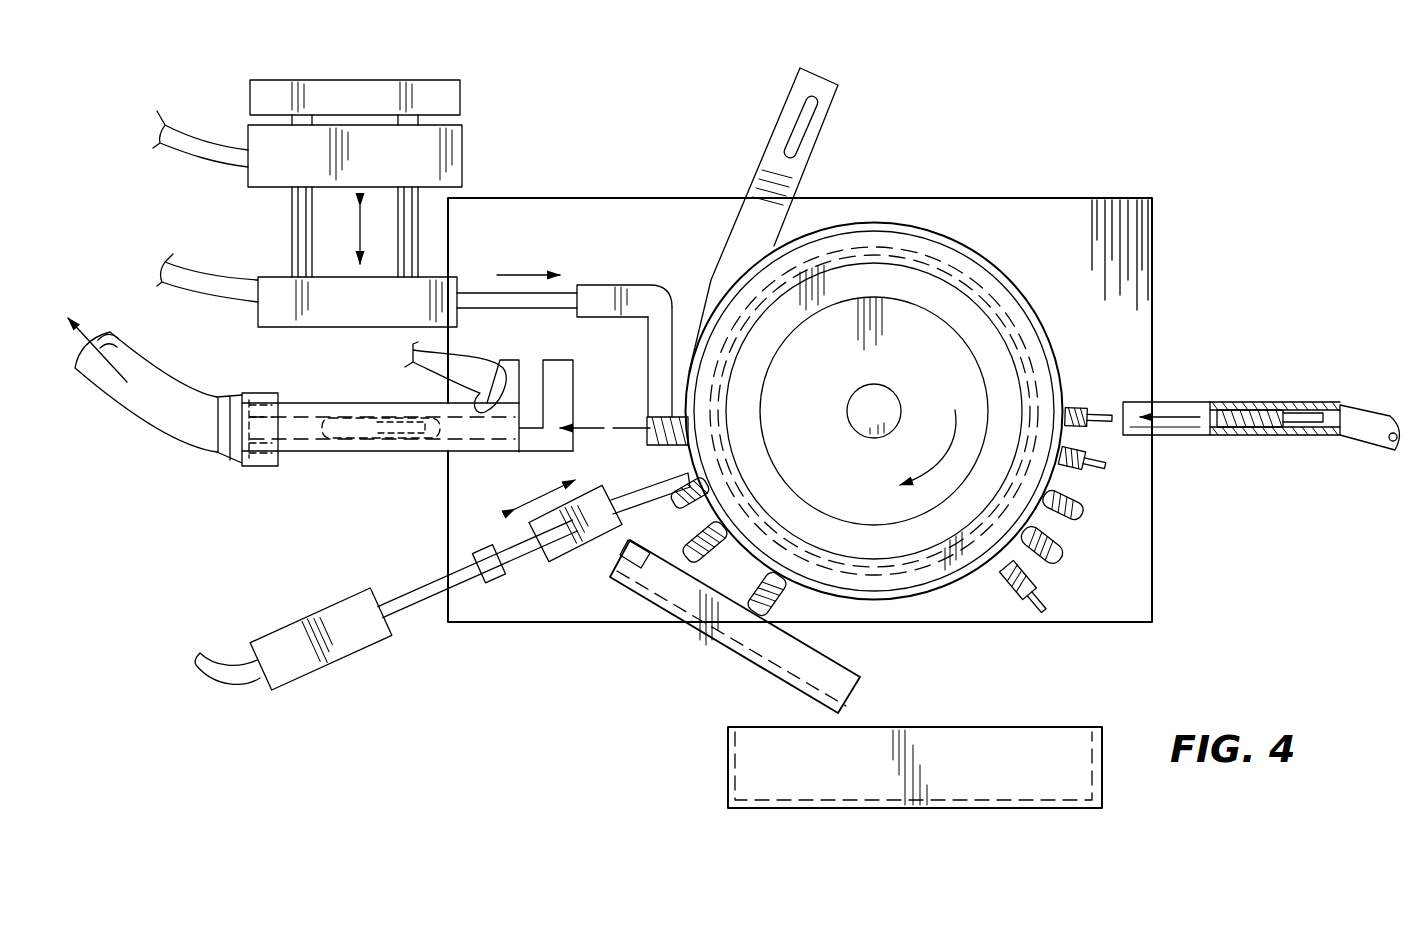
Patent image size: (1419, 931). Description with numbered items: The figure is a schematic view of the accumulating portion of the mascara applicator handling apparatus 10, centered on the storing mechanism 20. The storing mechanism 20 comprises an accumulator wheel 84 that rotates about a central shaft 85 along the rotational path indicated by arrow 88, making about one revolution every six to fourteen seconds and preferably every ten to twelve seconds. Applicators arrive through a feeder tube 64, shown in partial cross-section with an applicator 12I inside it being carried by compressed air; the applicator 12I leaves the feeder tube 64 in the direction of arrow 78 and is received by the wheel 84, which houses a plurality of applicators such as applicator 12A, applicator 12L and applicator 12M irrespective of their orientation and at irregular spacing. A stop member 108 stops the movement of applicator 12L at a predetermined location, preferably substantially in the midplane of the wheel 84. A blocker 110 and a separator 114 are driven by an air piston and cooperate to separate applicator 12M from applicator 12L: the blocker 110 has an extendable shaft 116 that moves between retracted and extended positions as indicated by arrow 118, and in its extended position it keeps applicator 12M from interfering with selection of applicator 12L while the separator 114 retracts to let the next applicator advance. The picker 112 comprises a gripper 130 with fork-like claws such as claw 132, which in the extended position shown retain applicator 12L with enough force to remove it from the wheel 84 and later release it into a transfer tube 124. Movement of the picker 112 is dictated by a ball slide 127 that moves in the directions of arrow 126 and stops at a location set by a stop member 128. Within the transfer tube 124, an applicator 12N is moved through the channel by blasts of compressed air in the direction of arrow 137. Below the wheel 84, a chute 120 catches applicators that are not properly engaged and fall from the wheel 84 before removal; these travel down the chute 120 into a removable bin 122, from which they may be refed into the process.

The wire processing apparatus 10 is at (985, 138).
The storing mechanism 20 is at (988, 228).
The feeder tube 64 is at (1372, 405).
The arrow 78 is at (1160, 410).
The accumulator wheel 84 is at (1030, 295).
The central shaft 85 is at (888, 404).
The arrow 88 is at (928, 447).
The stop member 108 is at (735, 230).
The blocker 110 is at (330, 668).
The picker 112 is at (594, 285).
The separator 114 is at (645, 565).
The extendable shaft 116 is at (630, 510).
The arrow 118 is at (548, 483).
The chute 120 is at (745, 657).
The bin 122 is at (727, 770).
The transfer tube 124 is at (345, 453).
The arrow 126 is at (352, 228).
The ball slide 127 is at (352, 199).
The stop member 128 is at (462, 100).
The gripper 130 is at (676, 318).
The claw 132 is at (648, 405).
The arrow 137 is at (124, 356).
The mascara applicator 12A is at (777, 604).
The mascara applicator 12I is at (1260, 402).
The mascara applicator 12L is at (672, 448).
The mascara applicator 12M is at (665, 520).
The mascara applicator 12N is at (366, 412).